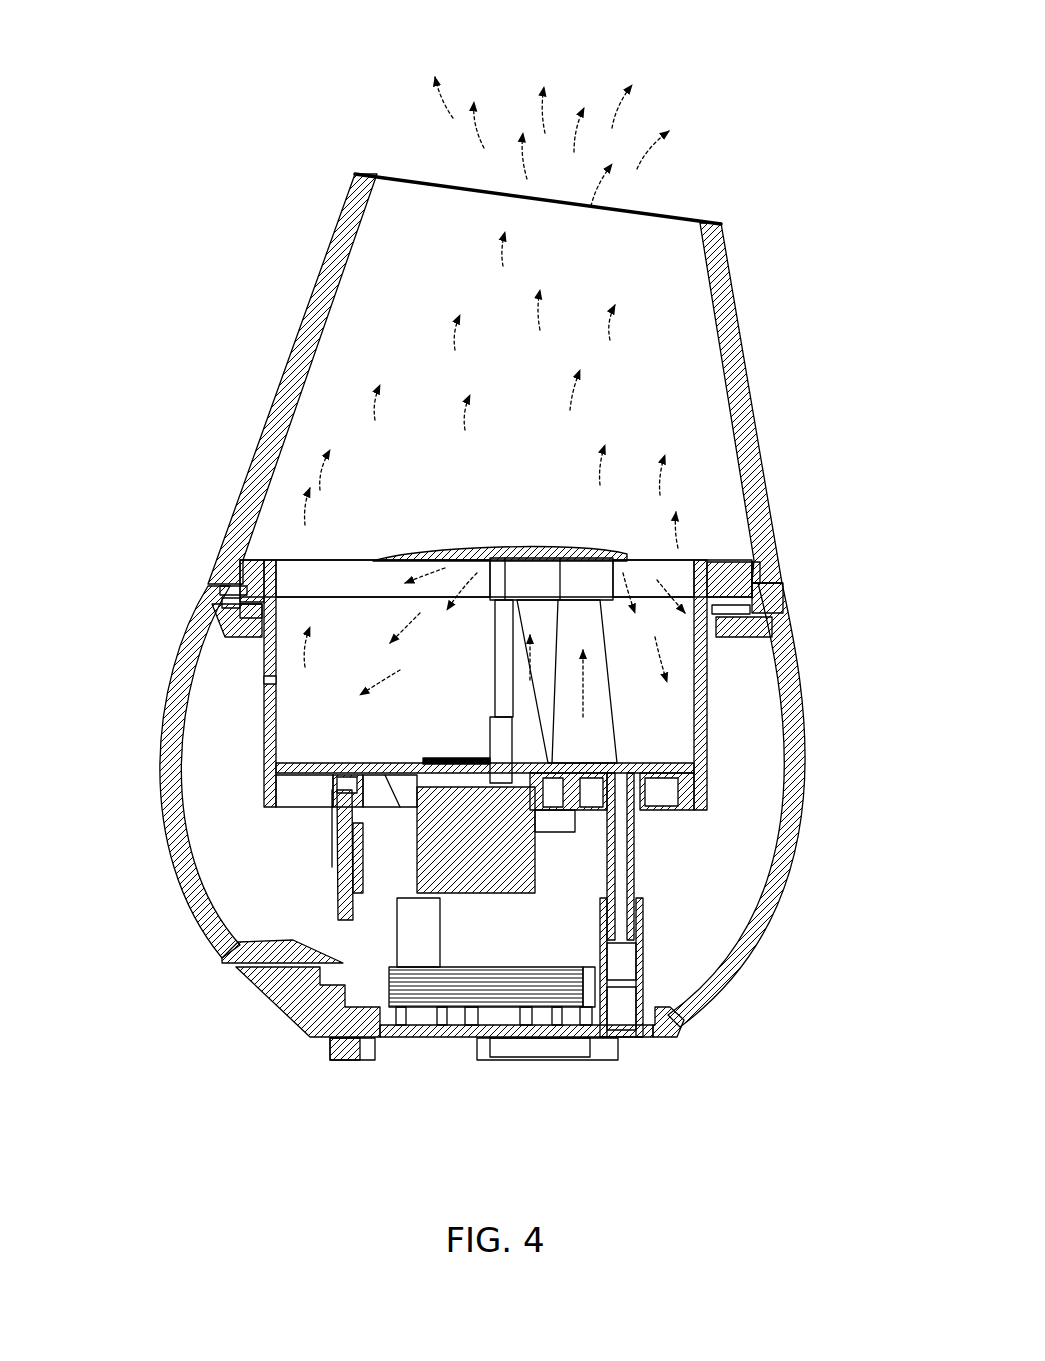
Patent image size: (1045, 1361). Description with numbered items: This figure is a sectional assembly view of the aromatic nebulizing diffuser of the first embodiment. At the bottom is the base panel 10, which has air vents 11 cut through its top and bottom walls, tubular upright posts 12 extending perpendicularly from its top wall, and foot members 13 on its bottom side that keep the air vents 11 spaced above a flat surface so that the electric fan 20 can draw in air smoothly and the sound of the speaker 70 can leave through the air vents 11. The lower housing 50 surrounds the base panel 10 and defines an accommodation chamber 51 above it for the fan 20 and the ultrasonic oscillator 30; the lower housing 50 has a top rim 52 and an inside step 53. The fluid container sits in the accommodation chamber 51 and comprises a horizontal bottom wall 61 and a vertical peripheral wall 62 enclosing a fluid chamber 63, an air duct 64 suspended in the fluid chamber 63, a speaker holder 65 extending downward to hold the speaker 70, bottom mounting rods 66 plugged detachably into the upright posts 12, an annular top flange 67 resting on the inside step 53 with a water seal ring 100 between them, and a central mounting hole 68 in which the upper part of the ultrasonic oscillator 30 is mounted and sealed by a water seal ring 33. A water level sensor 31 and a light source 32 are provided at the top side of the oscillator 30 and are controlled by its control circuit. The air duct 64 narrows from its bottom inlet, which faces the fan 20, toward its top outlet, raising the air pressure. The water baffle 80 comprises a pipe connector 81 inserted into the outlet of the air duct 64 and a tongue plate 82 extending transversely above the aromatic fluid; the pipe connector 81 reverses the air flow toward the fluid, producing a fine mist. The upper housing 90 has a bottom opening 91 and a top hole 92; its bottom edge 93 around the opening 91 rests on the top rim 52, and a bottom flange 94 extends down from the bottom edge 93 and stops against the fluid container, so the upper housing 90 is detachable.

The base panel 10 is at (408, 1044).
The air vents 11 is at (463, 1033).
The tubular upright posts 12 is at (640, 978).
The foot members 13 is at (606, 1047).
The electric fan 20 is at (533, 987).
The ultrasonic oscillator 30 is at (637, 877).
The water level sensor 31 is at (263, 673).
The light source 32 is at (495, 762).
The water seal ring 33 is at (412, 800).
The lower housing 50 is at (182, 932).
The accommodation chamber 51 is at (756, 778).
The top rim 52 is at (785, 603).
The inside step 53 is at (218, 609).
The horizontal bottom wall 61 is at (547, 853).
The vertical peripheral wall 62 is at (496, 738).
The fluid chamber 63 is at (292, 677).
The air duct 64 is at (603, 708).
The speaker holder 65 is at (330, 895).
The bottom mounting rods 66 is at (640, 927).
The annular top flange 67 is at (208, 578).
The mounting hole 68 is at (478, 770).
The speaker 70 is at (250, 938).
The water baffle 80 is at (590, 518).
The pipe connector 81 is at (600, 582).
The tongue plate 82 is at (615, 552).
The upper housing 90 is at (300, 295).
The opening 91 is at (318, 573).
The hole 92 is at (655, 216).
The bottom edge 93 is at (754, 560).
The bottom flange 94 is at (721, 562).
The water seal ring 100 is at (722, 620).